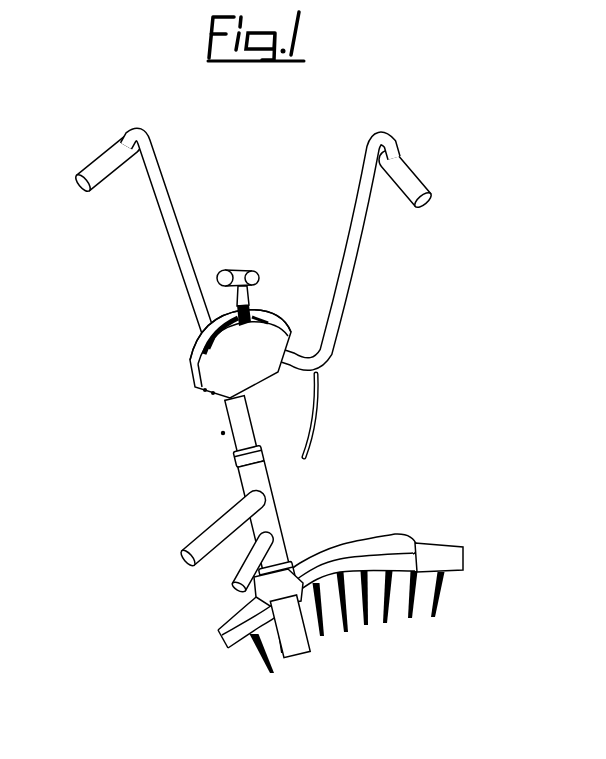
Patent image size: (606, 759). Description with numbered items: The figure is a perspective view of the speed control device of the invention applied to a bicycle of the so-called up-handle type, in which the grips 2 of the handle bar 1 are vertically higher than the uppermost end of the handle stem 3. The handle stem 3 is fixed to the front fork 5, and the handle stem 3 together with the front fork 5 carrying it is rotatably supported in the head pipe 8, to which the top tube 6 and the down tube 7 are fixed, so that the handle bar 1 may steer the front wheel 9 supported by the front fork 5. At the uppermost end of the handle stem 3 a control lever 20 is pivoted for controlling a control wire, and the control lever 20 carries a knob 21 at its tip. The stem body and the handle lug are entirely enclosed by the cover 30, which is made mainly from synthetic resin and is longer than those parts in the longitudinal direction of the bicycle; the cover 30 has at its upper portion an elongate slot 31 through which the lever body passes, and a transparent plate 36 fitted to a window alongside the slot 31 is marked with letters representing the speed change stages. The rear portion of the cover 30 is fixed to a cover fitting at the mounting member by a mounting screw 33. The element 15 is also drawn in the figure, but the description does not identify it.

The handle bar 1 is at (330, 345).
The grips 2 is at (97, 167).
The handle stem 3 is at (224, 434).
The front fork 5 is at (298, 650).
The top tube 6 is at (217, 536).
The down tube 7 is at (247, 571).
The head pipe 8 is at (274, 523).
The front wheel 9 is at (440, 547).
The auxiliary rod 15 is at (320, 414).
The control lever 20 is at (250, 312).
The knob 21 is at (234, 274).
The cover 30 is at (198, 383).
The elongate slot 31 is at (200, 347).
The mounting screw 33 is at (202, 398).
The transparent plate 36 is at (201, 341).